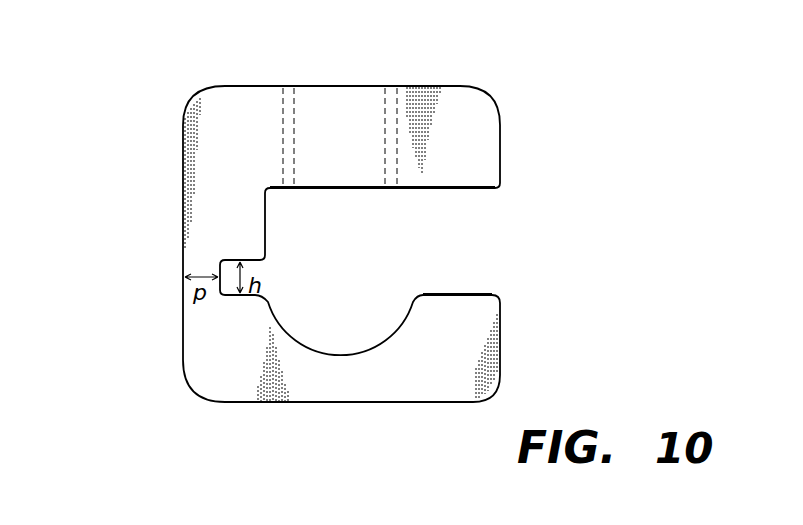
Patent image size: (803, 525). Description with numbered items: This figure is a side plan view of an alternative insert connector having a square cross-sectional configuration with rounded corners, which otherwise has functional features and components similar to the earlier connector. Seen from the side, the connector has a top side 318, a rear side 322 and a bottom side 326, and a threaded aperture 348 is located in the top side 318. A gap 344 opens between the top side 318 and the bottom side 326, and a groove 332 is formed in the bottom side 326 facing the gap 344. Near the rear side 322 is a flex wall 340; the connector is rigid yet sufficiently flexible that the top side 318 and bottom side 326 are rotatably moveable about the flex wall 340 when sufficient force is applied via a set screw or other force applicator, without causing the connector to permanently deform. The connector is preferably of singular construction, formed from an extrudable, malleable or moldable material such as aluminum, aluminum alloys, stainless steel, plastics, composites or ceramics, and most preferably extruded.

The top side 318 is at (437, 112).
The rear side 322 is at (180, 172).
The bottom side 326 is at (400, 383).
The groove 332 is at (337, 355).
The flex wall 340 is at (220, 300).
The gap 344 is at (370, 283).
The threaded aperture 348 is at (332, 113).